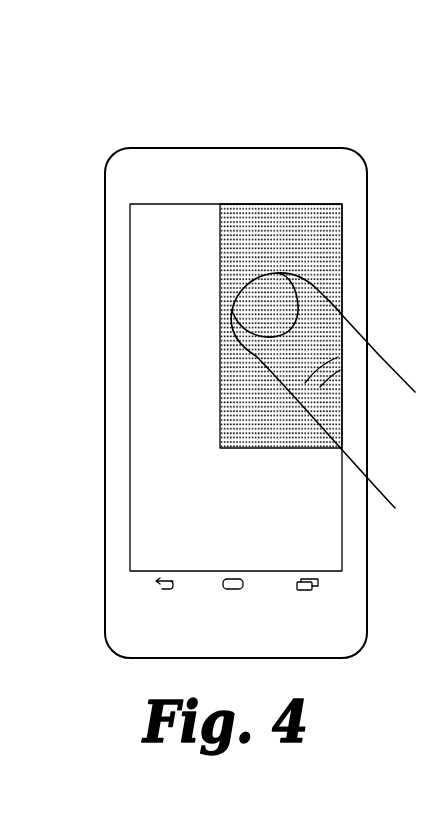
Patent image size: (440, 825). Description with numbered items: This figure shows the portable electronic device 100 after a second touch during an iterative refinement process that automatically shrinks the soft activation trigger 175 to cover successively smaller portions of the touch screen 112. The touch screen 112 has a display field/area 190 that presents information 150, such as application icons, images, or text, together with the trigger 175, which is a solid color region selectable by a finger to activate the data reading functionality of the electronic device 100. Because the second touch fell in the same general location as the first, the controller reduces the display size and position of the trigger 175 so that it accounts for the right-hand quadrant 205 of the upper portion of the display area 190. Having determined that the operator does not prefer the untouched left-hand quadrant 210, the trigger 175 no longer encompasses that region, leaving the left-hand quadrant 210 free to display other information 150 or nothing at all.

The portable electronic device 100 is at (140, 92).
The touch screen 112 is at (193, 203).
The left-hand quadrant 210 is at (162, 255).
The display field/area 190 is at (177, 402).
The right-hand quadrant 205 is at (313, 275).
The soft activation trigger 175 is at (270, 425).
The information 150 is at (328, 485).